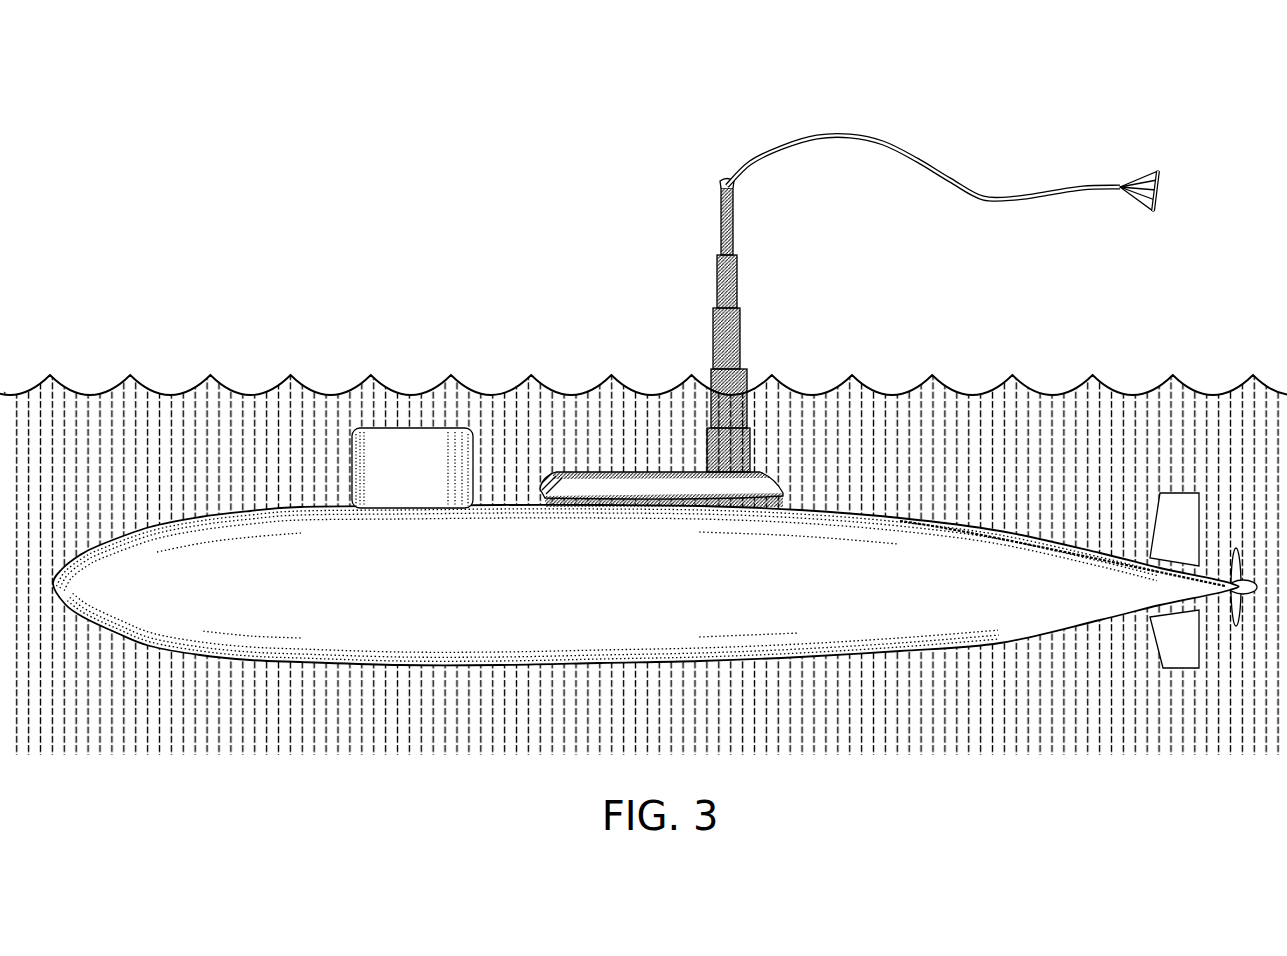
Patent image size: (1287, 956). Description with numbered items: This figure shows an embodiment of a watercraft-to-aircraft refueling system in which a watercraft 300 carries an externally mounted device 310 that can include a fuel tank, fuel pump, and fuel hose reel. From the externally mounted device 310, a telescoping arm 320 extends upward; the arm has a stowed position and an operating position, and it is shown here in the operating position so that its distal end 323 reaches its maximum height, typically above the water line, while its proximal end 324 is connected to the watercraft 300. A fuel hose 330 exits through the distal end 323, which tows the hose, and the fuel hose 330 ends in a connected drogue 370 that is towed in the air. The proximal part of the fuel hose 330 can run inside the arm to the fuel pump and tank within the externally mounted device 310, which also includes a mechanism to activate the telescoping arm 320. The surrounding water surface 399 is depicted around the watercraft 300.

The watercraft 300 is at (818, 590).
The externally mounted device 310 is at (599, 470).
The telescoping arm 320 is at (737, 283).
The distal end 323 is at (722, 186).
The proximal end 324 is at (762, 474).
The fuel hose 330 is at (893, 140).
The drogue 370 is at (1142, 172).
The water surface 399 is at (1045, 391).